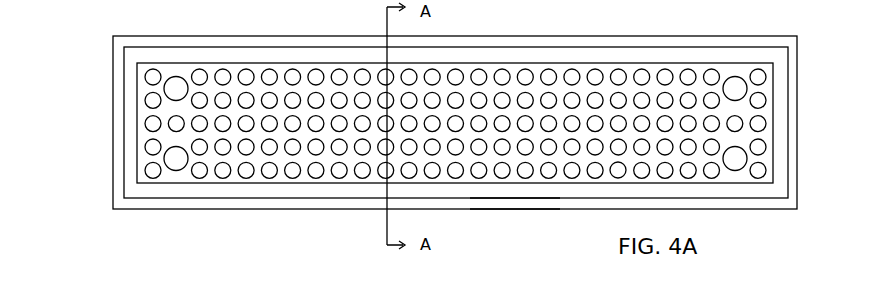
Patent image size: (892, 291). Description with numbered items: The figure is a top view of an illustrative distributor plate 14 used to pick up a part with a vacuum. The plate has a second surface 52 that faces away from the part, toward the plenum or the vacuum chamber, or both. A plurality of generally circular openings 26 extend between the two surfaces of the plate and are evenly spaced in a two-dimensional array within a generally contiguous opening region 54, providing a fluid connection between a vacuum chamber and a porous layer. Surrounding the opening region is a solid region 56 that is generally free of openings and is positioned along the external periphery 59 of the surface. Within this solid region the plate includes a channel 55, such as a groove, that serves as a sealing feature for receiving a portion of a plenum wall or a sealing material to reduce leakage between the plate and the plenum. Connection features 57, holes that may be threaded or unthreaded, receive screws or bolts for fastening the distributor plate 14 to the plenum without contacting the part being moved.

The distributor plate 14 is at (145, 137).
The openings 26 is at (688, 76).
The second surface 52 is at (604, 167).
The opening region 54 is at (630, 80).
The channel 55 is at (158, 190).
The solid region 56 is at (537, 190).
The connection feature 57 is at (178, 91).
The external periphery 59 is at (140, 205).